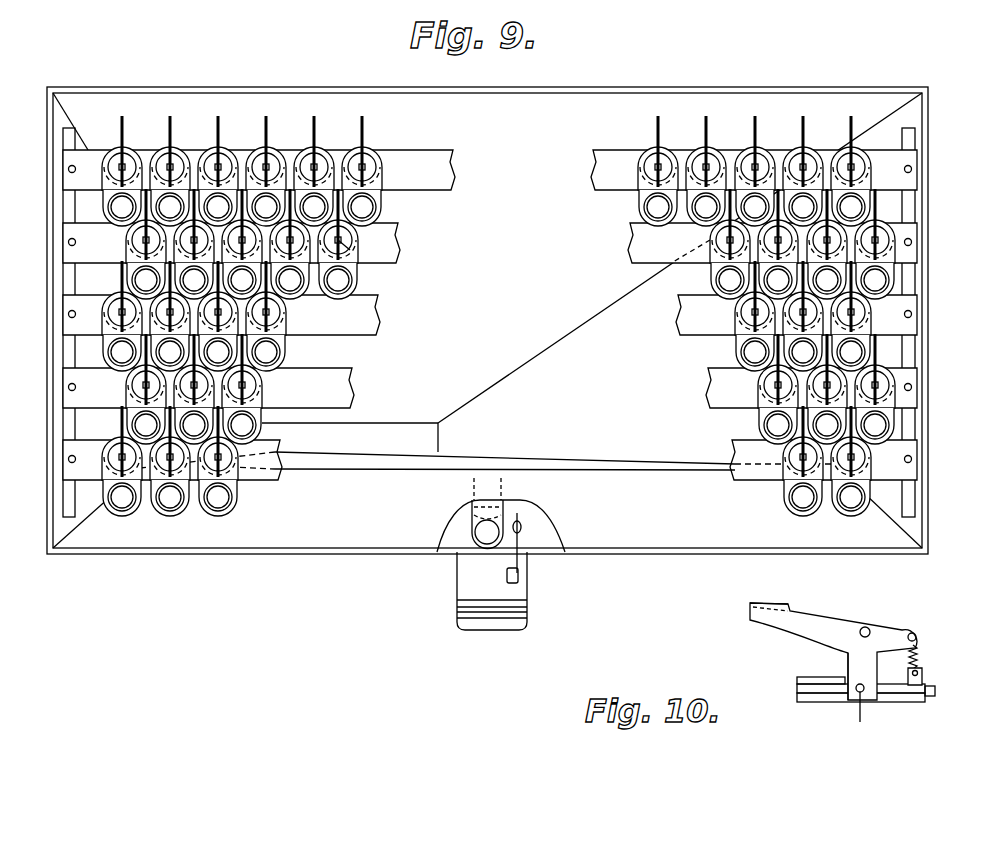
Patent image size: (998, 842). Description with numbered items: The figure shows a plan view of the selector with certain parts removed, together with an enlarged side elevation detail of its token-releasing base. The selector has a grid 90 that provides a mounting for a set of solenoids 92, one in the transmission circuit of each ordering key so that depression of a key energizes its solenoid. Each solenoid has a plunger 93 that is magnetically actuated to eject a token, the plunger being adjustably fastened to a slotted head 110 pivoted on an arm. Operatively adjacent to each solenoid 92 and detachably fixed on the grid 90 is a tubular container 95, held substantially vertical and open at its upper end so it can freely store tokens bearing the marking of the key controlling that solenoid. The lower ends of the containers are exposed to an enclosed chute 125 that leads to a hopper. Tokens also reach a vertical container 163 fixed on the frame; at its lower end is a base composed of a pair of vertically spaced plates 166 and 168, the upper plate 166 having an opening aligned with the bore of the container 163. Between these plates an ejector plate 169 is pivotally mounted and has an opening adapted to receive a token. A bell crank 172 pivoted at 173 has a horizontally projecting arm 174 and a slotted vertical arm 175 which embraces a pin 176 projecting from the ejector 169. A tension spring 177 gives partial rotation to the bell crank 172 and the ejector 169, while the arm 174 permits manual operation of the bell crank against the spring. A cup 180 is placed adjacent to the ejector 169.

In FIG. 9, the grid 90 is at (70, 353).
In FIG. 9, the solenoid 92 is at (117, 150).
In FIG. 9, the plunger 93 is at (128, 158).
In FIG. 9, the container 95 is at (109, 208).
In FIG. 9, the slotted head 110 is at (347, 246).
In FIG. 9, the chute 125 is at (603, 448).
In FIG. 9, the vertical container 163 is at (475, 540).
In FIG. 9, the bell crank 172 is at (520, 521).
In FIG. 10, the bell crank 172 is at (871, 622).
In FIG. 10, the pivot 173 is at (862, 627).
In FIG. 9, the horizontally projecting arm 174 is at (520, 575).
In FIG. 10, the horizontally projecting arm 174 is at (792, 614).
In FIG. 10, the slotted vertical arm 175 is at (855, 668).
In FIG. 10, the pin 176 is at (875, 712).
In FIG. 10, the spring 177 is at (912, 650).
In FIG. 9, the cup 180 is at (527, 615).
In FIG. 10, the upper plate 166 is at (800, 680).
In FIG. 10, the lower plate 168 is at (801, 698).
In FIG. 10, the ejector plate 169 is at (798, 686).